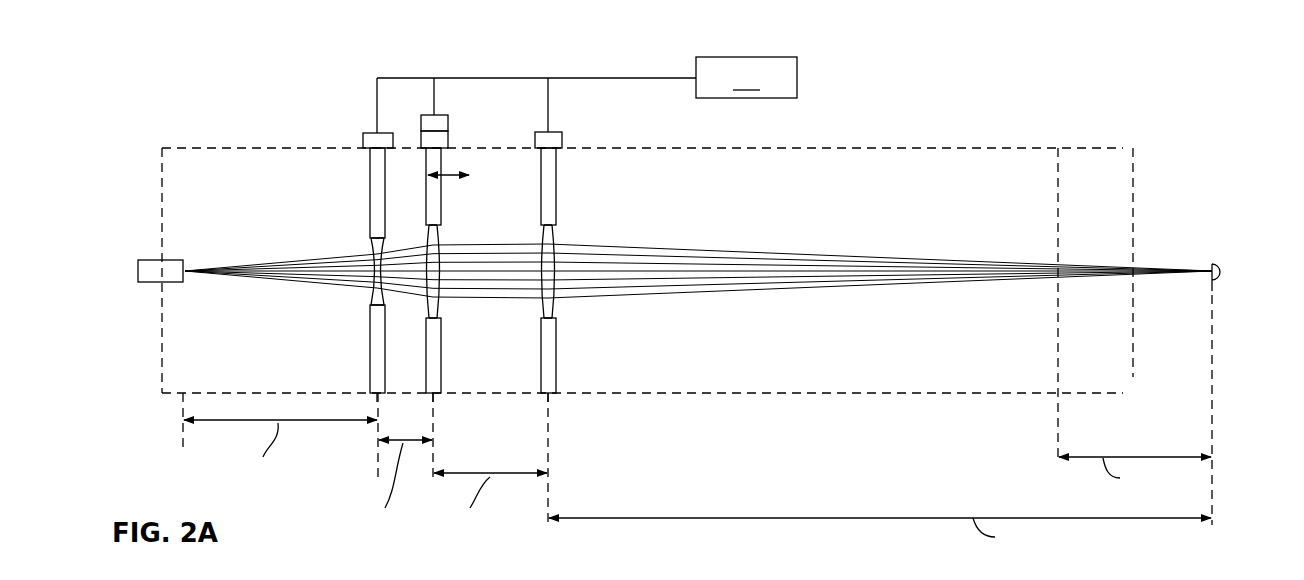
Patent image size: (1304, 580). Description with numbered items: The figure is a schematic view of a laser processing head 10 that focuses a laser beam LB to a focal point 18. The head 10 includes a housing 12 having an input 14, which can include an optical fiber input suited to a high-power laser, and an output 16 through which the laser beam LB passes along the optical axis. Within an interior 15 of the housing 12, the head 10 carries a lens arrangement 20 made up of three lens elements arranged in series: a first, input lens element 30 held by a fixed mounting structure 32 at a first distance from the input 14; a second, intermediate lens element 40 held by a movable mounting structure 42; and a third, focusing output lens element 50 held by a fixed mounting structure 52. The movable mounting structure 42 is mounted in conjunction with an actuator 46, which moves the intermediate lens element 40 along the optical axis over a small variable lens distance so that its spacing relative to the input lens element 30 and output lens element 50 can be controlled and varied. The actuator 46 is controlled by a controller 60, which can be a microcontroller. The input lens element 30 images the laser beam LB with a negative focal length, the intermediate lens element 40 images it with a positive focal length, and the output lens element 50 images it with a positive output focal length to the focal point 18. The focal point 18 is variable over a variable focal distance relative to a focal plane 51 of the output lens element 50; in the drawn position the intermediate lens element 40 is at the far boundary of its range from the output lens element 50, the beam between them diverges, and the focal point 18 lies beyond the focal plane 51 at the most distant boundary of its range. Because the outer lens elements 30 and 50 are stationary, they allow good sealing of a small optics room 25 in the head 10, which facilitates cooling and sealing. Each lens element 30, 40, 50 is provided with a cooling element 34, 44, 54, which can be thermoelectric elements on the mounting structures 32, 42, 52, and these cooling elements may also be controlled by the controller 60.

The laser processing head 10 is at (203, 88).
The housing 12 is at (898, 148).
The input 14 is at (155, 282).
The interior 15 is at (980, 153).
The output 16 is at (1082, 168).
The focal point 18 is at (1218, 267).
The lens arrangement 20 is at (271, 158).
The optics room 25 is at (522, 211).
The input lens element 30 is at (370, 287).
The fixed mounting structure 32 is at (370, 357).
The cooling element 34 is at (367, 138).
The intermediate lens element 40 is at (441, 300).
The movable mounting structure 42 is at (442, 383).
The cooling element 44 is at (450, 140).
The actuator 46 is at (450, 120).
The output lens element 50 is at (556, 300).
The focal plane 51 is at (1135, 215).
The fixed mounting structure 52 is at (557, 383).
The cooling element 54 is at (563, 138).
The controller 60 is at (587, 95).
The laser beam LB is at (810, 287).